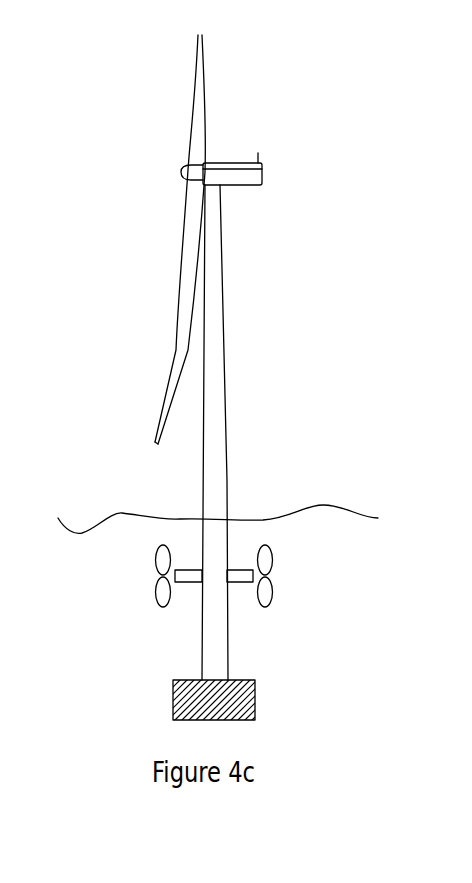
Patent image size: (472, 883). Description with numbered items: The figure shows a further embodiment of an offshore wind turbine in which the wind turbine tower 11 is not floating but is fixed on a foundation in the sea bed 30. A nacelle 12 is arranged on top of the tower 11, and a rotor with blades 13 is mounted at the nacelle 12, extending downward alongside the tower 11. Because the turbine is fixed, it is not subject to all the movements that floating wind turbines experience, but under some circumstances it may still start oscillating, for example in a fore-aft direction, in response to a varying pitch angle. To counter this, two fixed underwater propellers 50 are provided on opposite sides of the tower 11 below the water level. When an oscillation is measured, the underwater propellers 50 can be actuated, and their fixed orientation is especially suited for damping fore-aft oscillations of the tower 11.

The wind turbine tower 11 is at (218, 363).
The nacelle 12 is at (247, 175).
The rotor blade 13 is at (187, 228).
The fixed underwater propellers 50 is at (190, 578).
The sea bed 30 is at (230, 703).